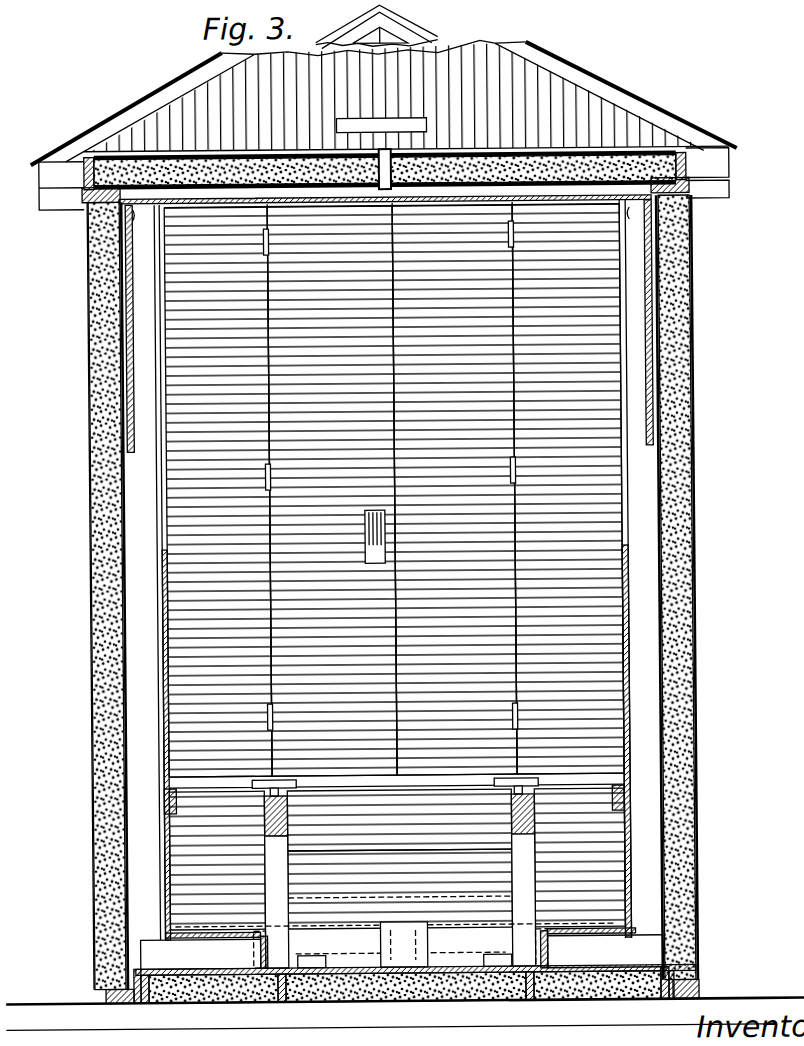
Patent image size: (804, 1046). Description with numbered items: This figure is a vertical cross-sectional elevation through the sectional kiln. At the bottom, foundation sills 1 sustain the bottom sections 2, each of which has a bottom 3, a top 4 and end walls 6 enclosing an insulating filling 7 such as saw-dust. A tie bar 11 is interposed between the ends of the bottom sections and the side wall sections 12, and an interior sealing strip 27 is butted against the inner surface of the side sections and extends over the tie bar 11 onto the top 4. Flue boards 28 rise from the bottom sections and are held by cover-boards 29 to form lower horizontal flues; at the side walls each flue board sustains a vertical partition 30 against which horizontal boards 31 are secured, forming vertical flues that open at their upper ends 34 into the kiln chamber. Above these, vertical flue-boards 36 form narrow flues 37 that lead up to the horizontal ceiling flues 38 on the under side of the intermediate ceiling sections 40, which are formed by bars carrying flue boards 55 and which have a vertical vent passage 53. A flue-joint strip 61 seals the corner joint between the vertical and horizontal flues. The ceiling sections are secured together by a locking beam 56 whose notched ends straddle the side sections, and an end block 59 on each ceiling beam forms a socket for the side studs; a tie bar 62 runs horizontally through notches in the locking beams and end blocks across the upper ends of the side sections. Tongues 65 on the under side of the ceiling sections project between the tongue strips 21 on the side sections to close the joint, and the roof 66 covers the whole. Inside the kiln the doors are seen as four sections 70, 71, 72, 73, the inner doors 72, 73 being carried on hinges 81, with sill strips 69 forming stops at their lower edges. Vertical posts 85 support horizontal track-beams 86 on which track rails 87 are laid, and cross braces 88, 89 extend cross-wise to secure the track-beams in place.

The foundation sills 1 is at (358, 1001).
The bottom sections 2 is at (488, 1001).
The bottom 3 is at (262, 1001).
The top 4 is at (214, 968).
The end walls 6 is at (140, 1001).
The filling 7 is at (596, 1001).
The tie bar 11 is at (130, 1001).
The side wall sections 12 is at (88, 596).
The tongue strips 21 is at (100, 192).
The interior sealing strip 27 is at (138, 970).
The flue boards 28 is at (401, 949).
The cover-boards 29 is at (194, 935).
The vertical partition 30 is at (396, 571).
The horizontal boards 31 is at (160, 692).
The upper ends 34 is at (150, 510).
The vertical flue-boards 36 is at (389, 326).
The narrow flues 37 is at (140, 373).
The horizontal ceiling flues 38 is at (230, 201).
The intermediate ceiling sections 40 is at (530, 158).
The vent passage 53 is at (380, 150).
The flue boards 55 is at (362, 206).
The locking beam 56 is at (722, 193).
The end block 59 is at (722, 170).
The flue-joint strip 61 is at (384, 220).
The tie bar 62 is at (95, 197).
The tongues 65 is at (120, 200).
The roof 66 is at (585, 82).
The sill strips 69 is at (198, 782).
The door section 70 is at (568, 489).
The door section 71 is at (218, 492).
The inner door 72 is at (454, 490).
The inner door 73 is at (332, 491).
The hinges 81 is at (514, 246).
The vertical posts 85 is at (400, 901).
The track-beams 86 is at (262, 815).
The track rails 87 is at (272, 786).
The cross braces 88 is at (370, 804).
The cross braces 89 is at (400, 885).